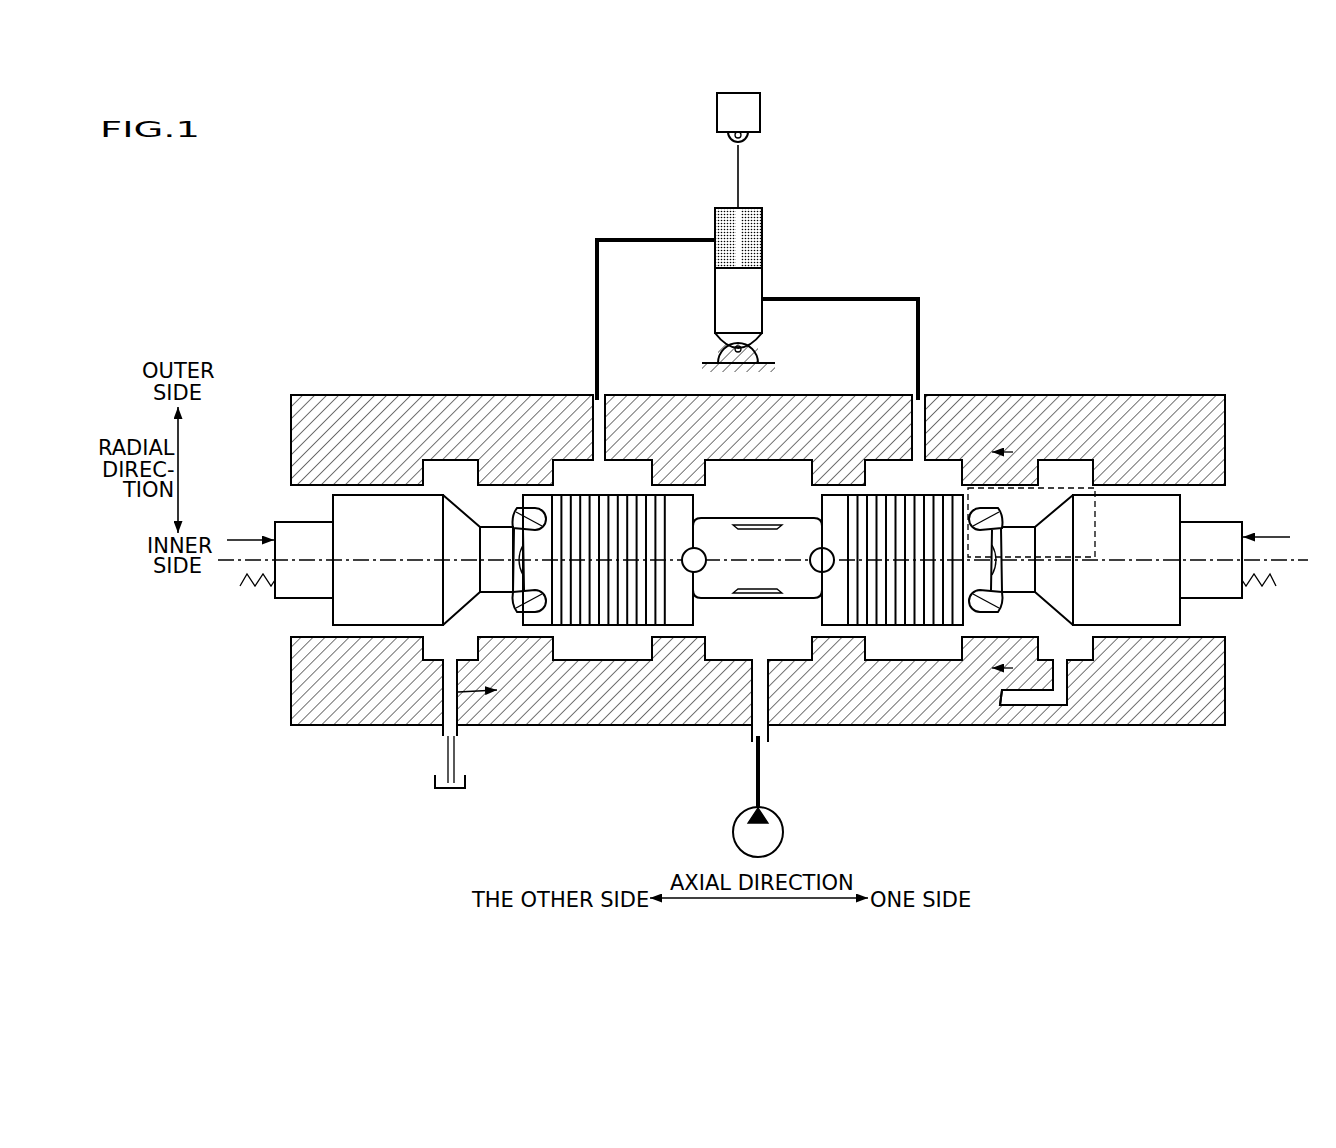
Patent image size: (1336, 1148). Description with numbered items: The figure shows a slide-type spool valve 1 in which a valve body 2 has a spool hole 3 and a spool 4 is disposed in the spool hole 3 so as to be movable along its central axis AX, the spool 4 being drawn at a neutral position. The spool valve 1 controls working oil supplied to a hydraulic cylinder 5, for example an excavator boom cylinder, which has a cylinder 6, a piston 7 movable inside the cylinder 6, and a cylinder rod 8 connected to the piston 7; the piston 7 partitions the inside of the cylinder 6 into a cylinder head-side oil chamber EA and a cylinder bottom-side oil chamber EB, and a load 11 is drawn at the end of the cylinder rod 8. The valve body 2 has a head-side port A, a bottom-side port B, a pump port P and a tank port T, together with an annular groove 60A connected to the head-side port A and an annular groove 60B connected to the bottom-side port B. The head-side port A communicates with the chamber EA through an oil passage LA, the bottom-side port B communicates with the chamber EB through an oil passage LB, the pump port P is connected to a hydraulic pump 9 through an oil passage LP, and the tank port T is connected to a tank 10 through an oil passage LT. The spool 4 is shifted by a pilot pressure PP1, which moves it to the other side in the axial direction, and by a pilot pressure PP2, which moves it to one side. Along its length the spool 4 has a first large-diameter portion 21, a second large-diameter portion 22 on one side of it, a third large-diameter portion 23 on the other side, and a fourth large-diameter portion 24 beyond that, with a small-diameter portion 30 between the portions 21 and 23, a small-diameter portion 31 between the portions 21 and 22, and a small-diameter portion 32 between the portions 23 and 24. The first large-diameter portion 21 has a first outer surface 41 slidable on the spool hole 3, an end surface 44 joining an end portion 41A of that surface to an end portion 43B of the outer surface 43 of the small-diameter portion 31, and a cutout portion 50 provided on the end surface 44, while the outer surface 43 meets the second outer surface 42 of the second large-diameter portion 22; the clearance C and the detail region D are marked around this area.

The spool valve 1 is at (1198, 359).
The valve body 2 is at (343, 415).
The spool hole 3 is at (510, 632).
The spool 4 is at (408, 510).
The hydraulic cylinder 5 is at (714, 287).
The cylinder 6 is at (763, 236).
The piston 7 is at (752, 264).
The cylinder rod 8 is at (740, 164).
The hydraulic pump 9 is at (785, 830).
The tank 10 is at (455, 790).
The load 11 is at (760, 110).
The first large-diameter portion 21 is at (915, 610).
The second large-diameter portion 22 is at (1142, 610).
The third large-diameter portion 23 is at (615, 610).
The fourth large-diameter portion 24 is at (368, 600).
The small-diameter portion 30 is at (792, 578).
The small-diameter portion 31 is at (1022, 590).
The small-diameter portion 32 is at (493, 580).
The first outer surface 41 is at (942, 497).
The end portion 41A is at (993, 507).
The second outer surface 42 is at (1142, 497).
The outer surface 43 is at (1040, 483).
The end portion 43B is at (1058, 706).
The end surface 44 is at (995, 553).
The cutout portion 50 is at (999, 515).
The annular groove 60A is at (620, 491).
The annular groove 60B is at (927, 491).
The head-side port A is at (592, 393).
The bottom-side port B is at (912, 393).
The clearance C is at (1012, 562).
The region D is at (1085, 488).
The pump port P is at (752, 742).
The tank port T is at (443, 730).
The oil passage LA is at (658, 238).
The oil passage LB is at (893, 298).
The oil passage LP is at (762, 787).
The oil passage LT is at (447, 758).
The pilot pressure PP1 is at (1235, 554).
The pilot pressure PP2 is at (280, 553).
The cylinder head-side oil chamber EA is at (752, 218).
The cylinder bottom-side oil chamber EB is at (727, 318).
The central axis AX is at (1298, 566).